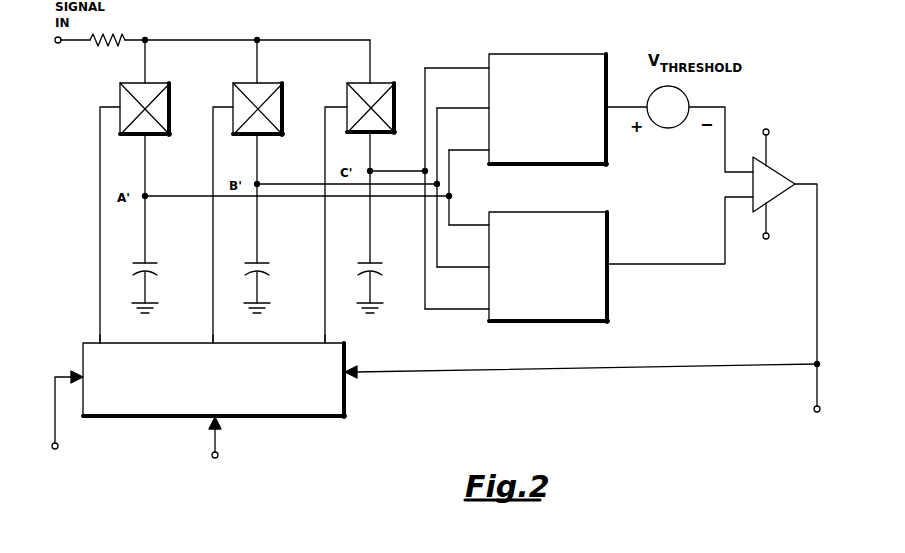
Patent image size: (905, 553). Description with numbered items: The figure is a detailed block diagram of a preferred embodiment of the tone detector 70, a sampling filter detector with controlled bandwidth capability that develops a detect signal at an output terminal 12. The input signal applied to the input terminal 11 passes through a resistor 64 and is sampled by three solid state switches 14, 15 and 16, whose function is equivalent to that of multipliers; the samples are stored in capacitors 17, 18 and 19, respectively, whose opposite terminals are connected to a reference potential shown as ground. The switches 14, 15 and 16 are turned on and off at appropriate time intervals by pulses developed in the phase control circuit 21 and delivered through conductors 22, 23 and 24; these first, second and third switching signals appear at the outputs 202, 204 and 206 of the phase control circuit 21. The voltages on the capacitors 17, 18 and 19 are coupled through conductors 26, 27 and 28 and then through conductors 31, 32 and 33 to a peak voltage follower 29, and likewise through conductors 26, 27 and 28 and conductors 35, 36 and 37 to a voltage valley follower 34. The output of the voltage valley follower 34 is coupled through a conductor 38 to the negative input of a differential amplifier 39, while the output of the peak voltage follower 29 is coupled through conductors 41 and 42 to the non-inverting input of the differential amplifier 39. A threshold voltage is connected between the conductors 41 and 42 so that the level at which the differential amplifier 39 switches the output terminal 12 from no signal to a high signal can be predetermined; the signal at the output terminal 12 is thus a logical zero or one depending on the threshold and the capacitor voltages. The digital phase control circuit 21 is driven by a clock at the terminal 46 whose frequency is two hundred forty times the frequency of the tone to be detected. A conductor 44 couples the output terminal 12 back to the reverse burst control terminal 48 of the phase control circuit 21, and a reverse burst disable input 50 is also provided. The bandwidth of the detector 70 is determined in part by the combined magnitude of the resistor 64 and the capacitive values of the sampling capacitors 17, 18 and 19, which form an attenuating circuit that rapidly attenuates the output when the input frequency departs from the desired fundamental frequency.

The input terminal 11 is at (70, 57).
The resistor 64 is at (107, 56).
The solid state switch 14 is at (163, 82).
The solid state switch 15 is at (276, 82).
The solid state switch 16 is at (350, 82).
The capacitor 17 is at (150, 262).
The capacitor 18 is at (262, 262).
The capacitor 19 is at (375, 262).
The conductor 22 is at (98, 158).
The conductor 23 is at (210, 158).
The conductor 24 is at (322, 156).
The conductor 26 is at (176, 194).
The conductor 27 is at (281, 182).
The conductor 28 is at (399, 169).
The peak voltage follower 29 is at (555, 54).
The conductor 31 is at (462, 148).
The conductor 32 is at (462, 106).
The conductor 33 is at (462, 66).
The voltage valley follower 34 is at (555, 212).
The conductor 35 is at (466, 227).
The conductor 36 is at (460, 269).
The conductor 37 is at (455, 311).
The conductor 38 is at (650, 264).
The differential amplifier 39 is at (777, 198).
The conductor 41 is at (630, 105).
The conductor 42 is at (707, 107).
The conductor 44 is at (688, 365).
The clock terminal 46 is at (216, 440).
The reverse burst control terminal 48 is at (350, 368).
The reverse burst disable input 50 is at (75, 371).
The phase control circuit 21 is at (305, 420).
The output 202 is at (103, 343).
The output 204 is at (215, 343).
The output 206 is at (327, 343).
The output terminal 12 is at (814, 403).
The tone detector 70 is at (417, 36).